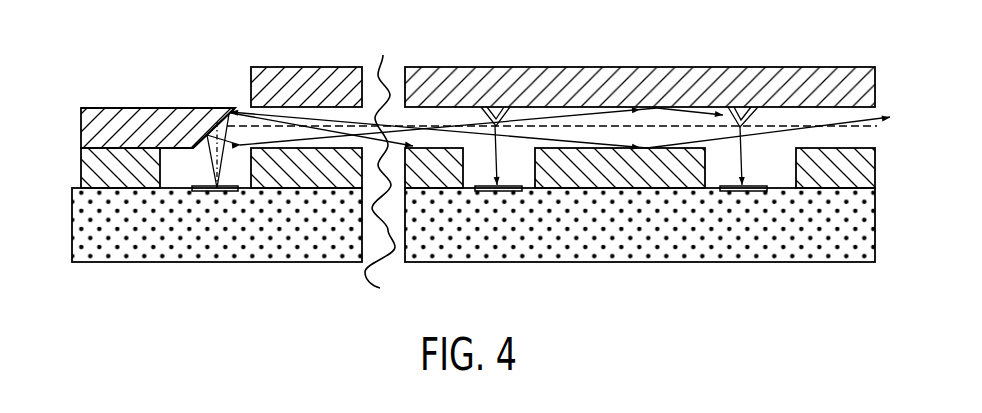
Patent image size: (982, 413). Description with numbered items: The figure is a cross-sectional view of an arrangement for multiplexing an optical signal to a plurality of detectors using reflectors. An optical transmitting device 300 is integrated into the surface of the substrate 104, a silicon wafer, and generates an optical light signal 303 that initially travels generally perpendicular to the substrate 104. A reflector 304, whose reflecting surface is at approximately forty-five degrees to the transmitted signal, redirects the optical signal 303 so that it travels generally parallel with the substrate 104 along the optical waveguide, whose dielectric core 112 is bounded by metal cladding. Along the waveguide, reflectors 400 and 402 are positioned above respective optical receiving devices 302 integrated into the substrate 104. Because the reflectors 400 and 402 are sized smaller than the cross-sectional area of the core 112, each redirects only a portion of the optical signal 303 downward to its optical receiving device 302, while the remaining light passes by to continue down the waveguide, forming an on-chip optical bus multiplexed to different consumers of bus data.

The substrate 104 is at (135, 254).
The dielectric core 112 is at (435, 113).
The optical transmitting device 300 is at (208, 193).
The optical receiving device 302 is at (490, 195).
The optical light signal 303 is at (208, 166).
The reflector 304 is at (155, 106).
The reflector 400 is at (508, 113).
The reflector 402 is at (747, 110).